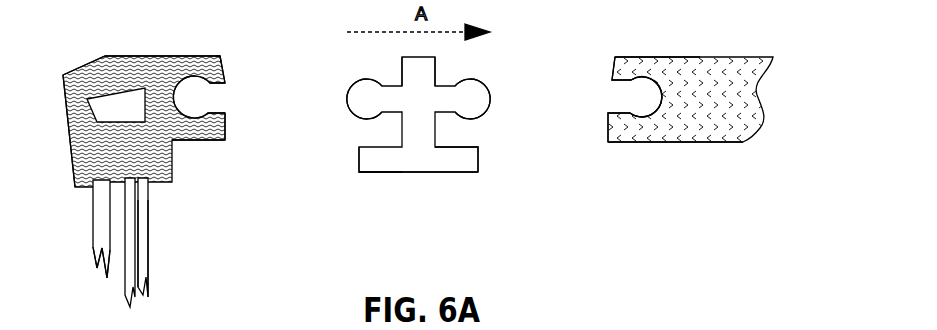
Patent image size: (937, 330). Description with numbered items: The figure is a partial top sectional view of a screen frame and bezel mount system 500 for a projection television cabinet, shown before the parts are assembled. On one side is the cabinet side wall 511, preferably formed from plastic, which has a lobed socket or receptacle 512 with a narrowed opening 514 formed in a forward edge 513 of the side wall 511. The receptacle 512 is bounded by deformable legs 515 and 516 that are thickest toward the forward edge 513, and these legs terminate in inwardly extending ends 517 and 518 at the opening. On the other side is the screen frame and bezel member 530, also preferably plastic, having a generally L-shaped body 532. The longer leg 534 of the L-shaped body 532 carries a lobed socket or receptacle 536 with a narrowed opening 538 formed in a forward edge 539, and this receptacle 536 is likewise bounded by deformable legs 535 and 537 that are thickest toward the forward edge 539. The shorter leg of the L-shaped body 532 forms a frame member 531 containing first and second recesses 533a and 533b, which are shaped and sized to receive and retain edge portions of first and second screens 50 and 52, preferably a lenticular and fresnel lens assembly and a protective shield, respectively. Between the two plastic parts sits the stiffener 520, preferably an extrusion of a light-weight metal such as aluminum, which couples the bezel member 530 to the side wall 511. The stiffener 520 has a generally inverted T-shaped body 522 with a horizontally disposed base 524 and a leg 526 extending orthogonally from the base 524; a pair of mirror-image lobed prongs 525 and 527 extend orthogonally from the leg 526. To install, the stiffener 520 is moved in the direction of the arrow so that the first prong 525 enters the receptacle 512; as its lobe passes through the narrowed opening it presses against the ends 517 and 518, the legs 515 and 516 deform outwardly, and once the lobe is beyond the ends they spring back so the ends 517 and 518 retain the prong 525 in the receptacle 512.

The first screen 50 is at (150, 265).
The second screen 52 is at (103, 242).
The screen frame and bezel mount system 500 is at (435, 256).
The cabinet side wall 511 is at (715, 82).
The lobed socket or receptacle 512 is at (653, 108).
The forward edge 513 is at (613, 72).
The narrowed opening 514 is at (607, 113).
The deformable leg 515 is at (625, 57).
The deformable leg 516 is at (637, 143).
The inwardly extending end 517 is at (628, 82).
The inwardly extending end 518 is at (628, 100).
The stiffener 520 is at (428, 171).
The inverted T-shaped body 522 is at (400, 167).
The base 524 is at (473, 163).
The first lobed prong 525 is at (473, 89).
The leg 526 is at (437, 73).
The second lobed prong 527 is at (365, 110).
The screen frame and bezel member 530 is at (173, 179).
The frame member 531 is at (72, 157).
The L-shaped body 532 is at (72, 67).
The first recess 533a is at (143, 183).
The second recess 533b is at (100, 188).
The longer leg 534 is at (167, 57).
The deformable leg 535 is at (220, 76).
The lobed socket or receptacle 536 is at (186, 100).
The deformable leg 537 is at (210, 142).
The narrowed opening 538 is at (218, 100).
The forward edge 539 is at (227, 128).